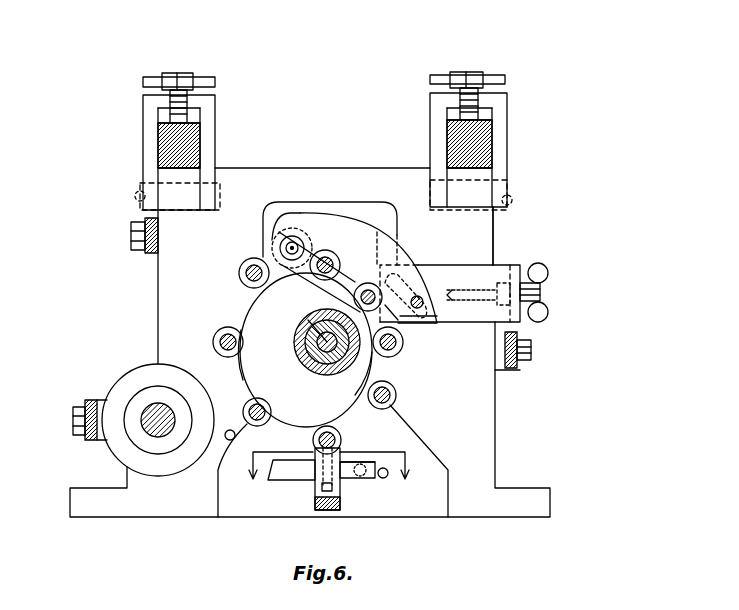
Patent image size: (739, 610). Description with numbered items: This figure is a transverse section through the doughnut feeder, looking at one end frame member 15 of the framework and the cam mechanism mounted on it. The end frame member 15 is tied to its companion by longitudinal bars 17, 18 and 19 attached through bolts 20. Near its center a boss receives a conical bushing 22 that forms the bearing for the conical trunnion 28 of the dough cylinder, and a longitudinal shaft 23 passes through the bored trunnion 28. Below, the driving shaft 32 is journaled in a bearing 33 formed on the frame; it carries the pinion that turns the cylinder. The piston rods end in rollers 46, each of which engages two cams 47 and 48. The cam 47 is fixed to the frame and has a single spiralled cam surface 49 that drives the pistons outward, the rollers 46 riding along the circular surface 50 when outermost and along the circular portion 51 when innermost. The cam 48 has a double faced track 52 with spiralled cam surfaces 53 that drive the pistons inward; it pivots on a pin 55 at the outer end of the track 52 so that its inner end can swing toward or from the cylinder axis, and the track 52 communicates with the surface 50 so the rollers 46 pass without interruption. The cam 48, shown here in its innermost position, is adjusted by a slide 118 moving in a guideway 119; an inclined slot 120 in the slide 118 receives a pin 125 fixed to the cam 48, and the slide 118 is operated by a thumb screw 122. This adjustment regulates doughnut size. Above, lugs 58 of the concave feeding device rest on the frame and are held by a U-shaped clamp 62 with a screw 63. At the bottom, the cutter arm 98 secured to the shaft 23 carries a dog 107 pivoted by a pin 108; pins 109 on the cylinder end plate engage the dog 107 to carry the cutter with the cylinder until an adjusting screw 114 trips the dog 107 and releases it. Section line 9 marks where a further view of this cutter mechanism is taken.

The section line 9- 9 is at (327, 467).
The end frame member 15 is at (170, 310).
The longitudinal bar 17 is at (518, 330).
The longitudinal bar 18 is at (148, 252).
The longitudinal bar 19 is at (90, 400).
The bolt 20 is at (131, 235).
The conical bushing 22 is at (320, 365).
The longitudinal shaft 23 is at (312, 330).
The trunnion 28 is at (292, 345).
The driving shaft 32 is at (152, 405).
The bearing 33 is at (128, 452).
The roller 46 is at (228, 327).
The cam 47 is at (385, 425).
The cam 48 is at (340, 223).
The spiralled cam surface 49 is at (367, 375).
The circular surface 50 is at (244, 372).
The circular portion 51 is at (402, 358).
The double faced track 52 is at (355, 258).
The spiralled cam surface 53 is at (313, 243).
The pin 55 is at (290, 250).
The lug 58 is at (168, 140).
The U-shaped clamp 62 is at (152, 112).
The screw 63 is at (165, 80).
The arm 98 is at (313, 507).
The dog 107 is at (300, 472).
The pin 108 is at (340, 487).
The pin 109 is at (386, 478).
The adjusting screw 114 is at (228, 440).
The slide 118 is at (497, 272).
The guideway 119 is at (478, 262).
The inclined slot 120 is at (400, 283).
The thumb screw 122 is at (548, 270).
The pin 125 is at (422, 316).